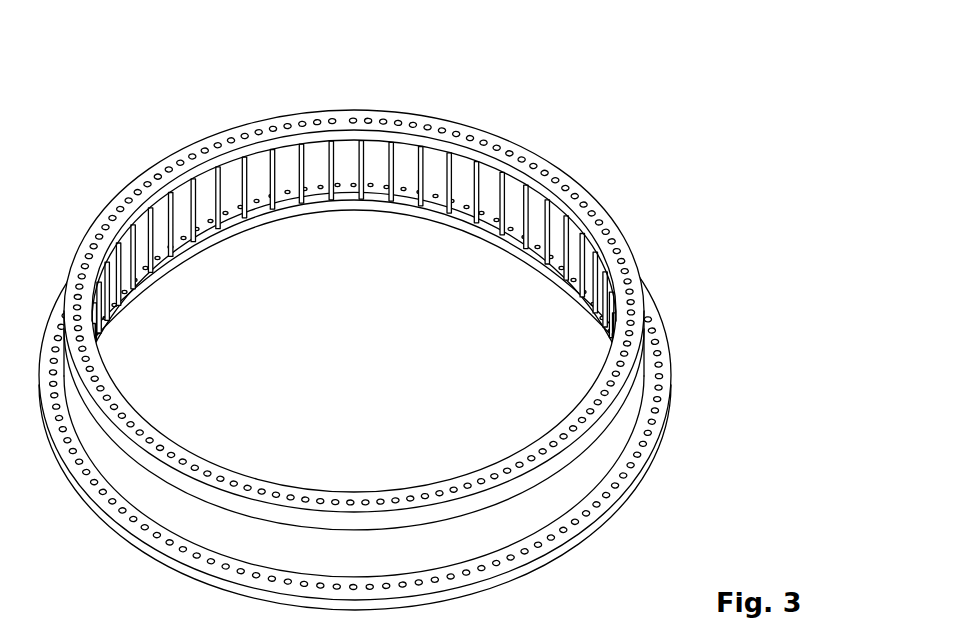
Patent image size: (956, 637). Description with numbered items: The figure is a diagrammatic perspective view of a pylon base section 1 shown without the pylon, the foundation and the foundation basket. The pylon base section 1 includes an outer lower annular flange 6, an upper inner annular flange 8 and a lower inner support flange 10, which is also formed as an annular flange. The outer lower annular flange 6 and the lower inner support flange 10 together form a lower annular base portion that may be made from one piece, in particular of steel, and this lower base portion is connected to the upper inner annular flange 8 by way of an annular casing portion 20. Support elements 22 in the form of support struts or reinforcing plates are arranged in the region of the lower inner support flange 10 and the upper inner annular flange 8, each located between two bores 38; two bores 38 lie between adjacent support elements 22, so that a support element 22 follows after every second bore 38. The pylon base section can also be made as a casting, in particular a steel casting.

The pylon base section 1 is at (381, 327).
The outer lower annular flange 6 is at (544, 557).
The upper inner annular flange 8 is at (362, 113).
The lower inner support flange 10 is at (432, 212).
The annular casing portion 20 is at (200, 523).
The support elements 22 is at (503, 194).
The bores 38 is at (413, 123).